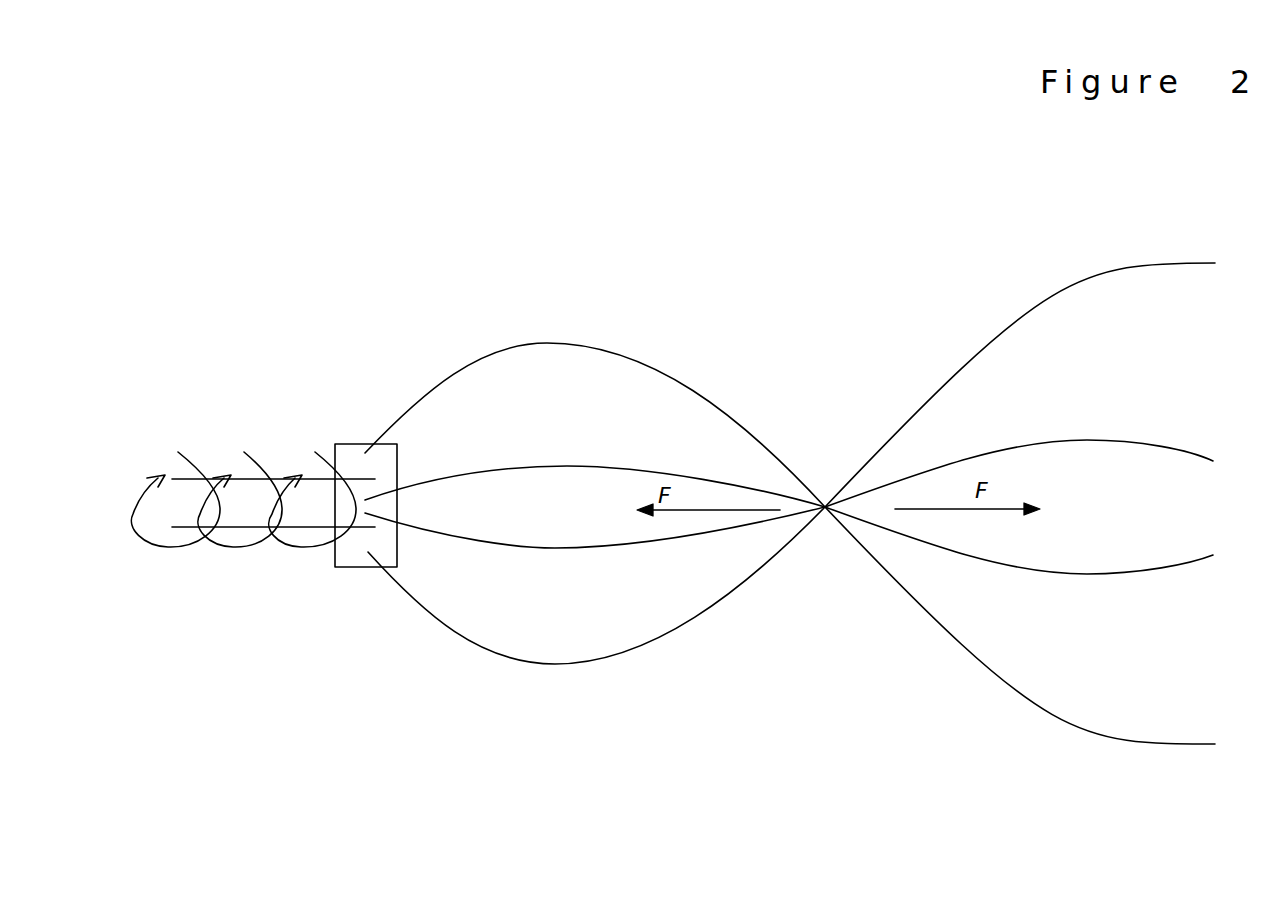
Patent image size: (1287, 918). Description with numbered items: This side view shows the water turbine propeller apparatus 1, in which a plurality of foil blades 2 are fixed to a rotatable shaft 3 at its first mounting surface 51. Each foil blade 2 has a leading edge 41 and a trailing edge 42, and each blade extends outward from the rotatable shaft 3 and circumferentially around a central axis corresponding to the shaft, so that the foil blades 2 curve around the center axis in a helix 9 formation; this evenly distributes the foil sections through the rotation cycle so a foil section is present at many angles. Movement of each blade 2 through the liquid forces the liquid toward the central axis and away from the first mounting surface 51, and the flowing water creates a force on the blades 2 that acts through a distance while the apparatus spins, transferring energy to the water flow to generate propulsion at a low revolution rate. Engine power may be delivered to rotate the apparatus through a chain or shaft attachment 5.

The water turbine propeller apparatus 1 is at (488, 353).
The foil blade 2 is at (1153, 265).
The rotatable shaft 3 is at (240, 480).
The chain or shaft attachment 5 is at (331, 568).
The helix 9 is at (693, 622).
The leading edge 41 is at (1203, 745).
The trailing edge 42 is at (363, 453).
The first mounting surface 51 is at (393, 543).